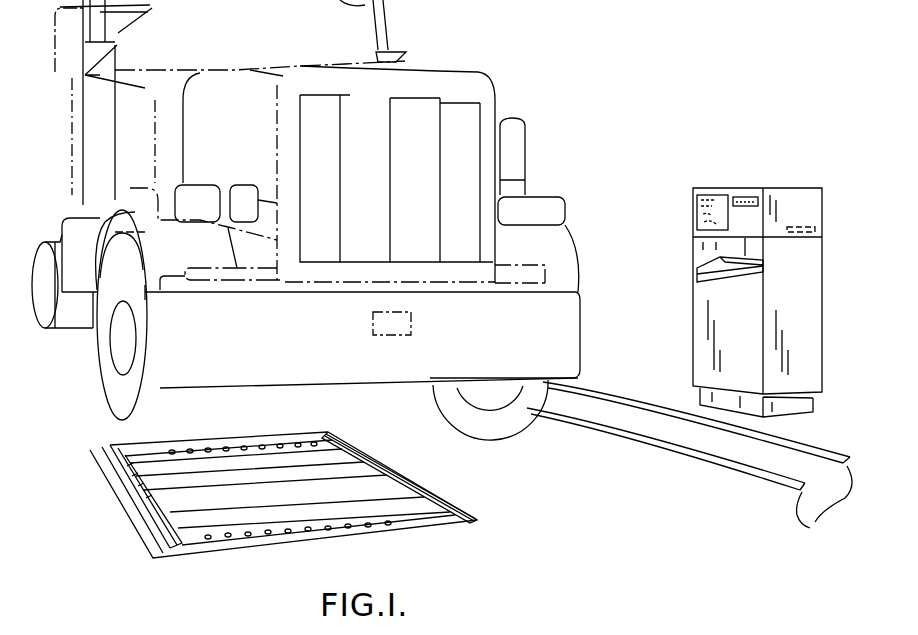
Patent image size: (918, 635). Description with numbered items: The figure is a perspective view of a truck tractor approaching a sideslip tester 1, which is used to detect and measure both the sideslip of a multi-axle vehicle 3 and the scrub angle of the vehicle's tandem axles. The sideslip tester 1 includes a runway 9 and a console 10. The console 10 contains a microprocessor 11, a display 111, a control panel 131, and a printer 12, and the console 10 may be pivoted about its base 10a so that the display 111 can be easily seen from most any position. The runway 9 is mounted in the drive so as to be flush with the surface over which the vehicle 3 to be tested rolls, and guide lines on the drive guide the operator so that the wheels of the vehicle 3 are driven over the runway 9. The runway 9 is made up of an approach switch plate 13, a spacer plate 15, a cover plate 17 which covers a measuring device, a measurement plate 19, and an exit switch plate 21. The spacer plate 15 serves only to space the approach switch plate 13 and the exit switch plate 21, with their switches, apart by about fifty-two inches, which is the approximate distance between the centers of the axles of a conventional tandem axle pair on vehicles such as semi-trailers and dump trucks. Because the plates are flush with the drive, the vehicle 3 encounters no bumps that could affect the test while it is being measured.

The sideslip tester 1 is at (648, 452).
The multi-axle vehicle 3 is at (485, 76).
The runway 9 is at (385, 457).
The console 10 is at (805, 285).
The base 10a is at (808, 407).
The microprocessor 11 is at (793, 225).
The printer 12 is at (700, 272).
The approach switch plate 13 is at (113, 443).
The spacer plate 15 is at (140, 468).
The cover plate 17 is at (150, 488).
The measurement plate 19 is at (173, 510).
The exit switch plate 21 is at (197, 543).
The display 111 is at (700, 192).
The control panel 131 is at (752, 188).